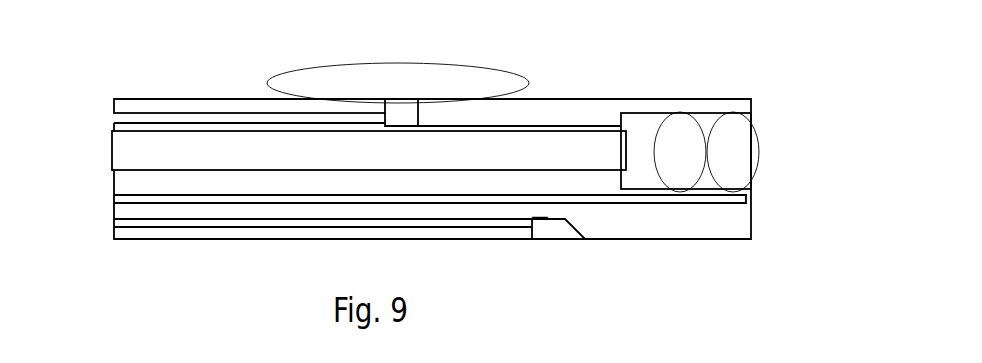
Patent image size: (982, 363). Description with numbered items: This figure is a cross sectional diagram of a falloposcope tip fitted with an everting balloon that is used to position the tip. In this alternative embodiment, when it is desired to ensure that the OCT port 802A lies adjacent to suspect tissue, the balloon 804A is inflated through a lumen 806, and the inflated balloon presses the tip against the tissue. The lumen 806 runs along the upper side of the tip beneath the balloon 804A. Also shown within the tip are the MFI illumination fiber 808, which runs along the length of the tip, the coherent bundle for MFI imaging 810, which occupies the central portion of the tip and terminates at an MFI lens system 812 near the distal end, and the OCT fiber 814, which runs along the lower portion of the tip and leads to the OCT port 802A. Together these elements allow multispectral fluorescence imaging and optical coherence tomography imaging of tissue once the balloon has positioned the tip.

The lumen 806 is at (172, 112).
The balloon 804A is at (423, 80).
The coherent bundle for MFI imaging 810 is at (533, 150).
The MFI lens system 812 is at (752, 118).
The MFI illumination fiber 808 is at (750, 198).
The OCT fiber 814 is at (118, 222).
The OCT port 802A is at (540, 229).